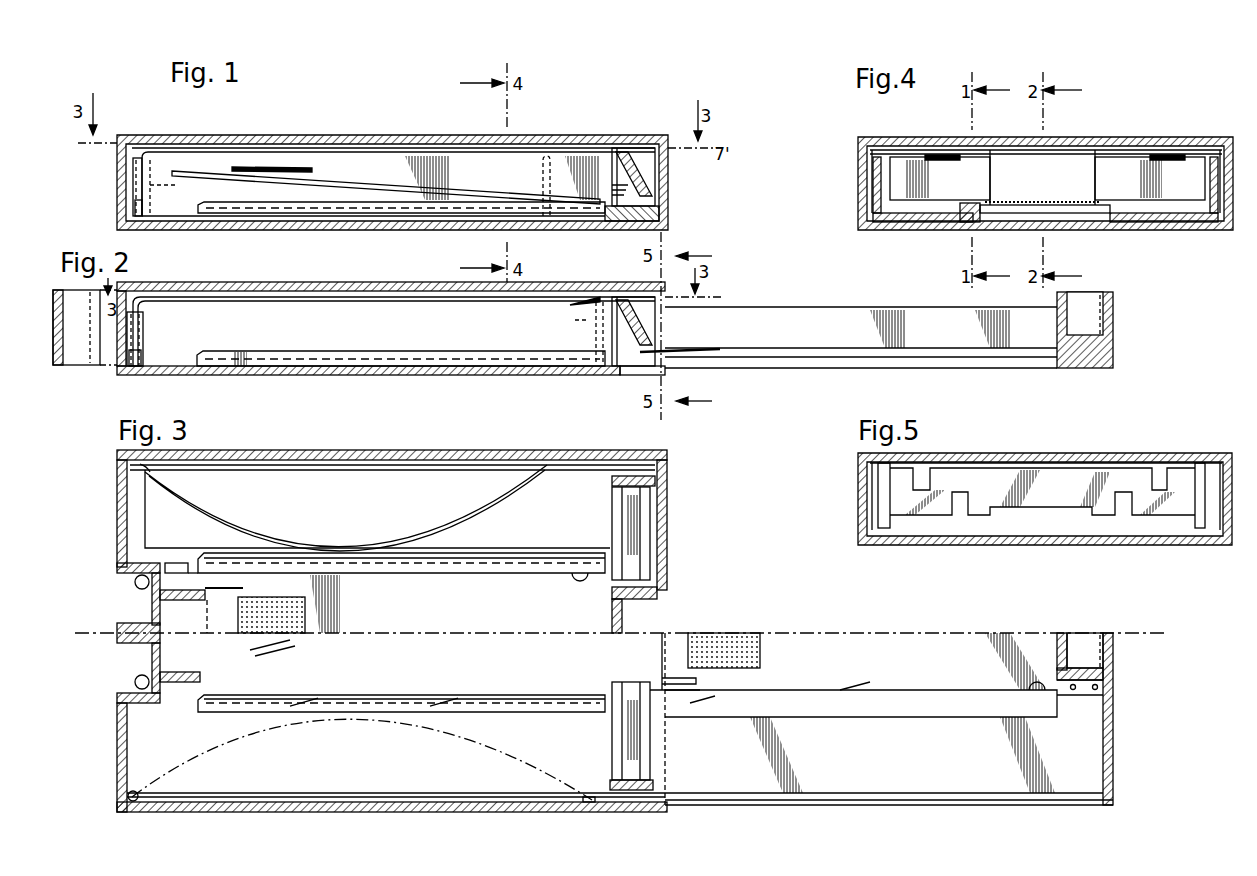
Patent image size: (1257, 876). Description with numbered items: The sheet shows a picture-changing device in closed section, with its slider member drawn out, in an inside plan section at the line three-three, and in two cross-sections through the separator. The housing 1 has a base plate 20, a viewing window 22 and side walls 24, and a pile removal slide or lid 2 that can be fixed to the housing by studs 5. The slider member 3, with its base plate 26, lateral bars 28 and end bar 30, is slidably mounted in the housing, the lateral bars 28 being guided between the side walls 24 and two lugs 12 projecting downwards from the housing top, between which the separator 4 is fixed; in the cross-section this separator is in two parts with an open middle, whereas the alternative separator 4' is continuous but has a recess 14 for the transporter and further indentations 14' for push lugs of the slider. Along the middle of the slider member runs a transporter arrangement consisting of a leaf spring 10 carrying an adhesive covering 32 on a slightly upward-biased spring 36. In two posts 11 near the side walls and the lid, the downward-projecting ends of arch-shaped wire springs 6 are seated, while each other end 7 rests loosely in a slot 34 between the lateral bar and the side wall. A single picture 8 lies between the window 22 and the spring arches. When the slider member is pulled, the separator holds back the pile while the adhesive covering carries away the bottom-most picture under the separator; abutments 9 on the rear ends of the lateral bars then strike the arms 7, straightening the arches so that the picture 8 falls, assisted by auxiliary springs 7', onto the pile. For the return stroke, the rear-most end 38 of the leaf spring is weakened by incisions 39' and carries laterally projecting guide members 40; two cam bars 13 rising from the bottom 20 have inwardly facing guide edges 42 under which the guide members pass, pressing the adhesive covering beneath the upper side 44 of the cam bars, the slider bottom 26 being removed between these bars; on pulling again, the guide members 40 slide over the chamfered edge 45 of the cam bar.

In FIG. 1, the housing 1 is at (124, 137).
In FIG. 2, the housing 1 is at (391, 328).
In FIG. 3, the housing 1 is at (392, 631).
In FIG. 4, the housing 1 is at (866, 137).
In FIG. 1, the pile removal slide 2 is at (122, 148).
In FIG. 2, the pile removal slide 2 is at (74, 370).
In FIG. 3, the pile removal slide 2 is at (117, 742).
In FIG. 1, the slider member 3 is at (684, 189).
In FIG. 2, the slider member 3 is at (757, 307).
In FIG. 3, the slider member 3 is at (1125, 672).
In FIG. 1, the separator 4 is at (632, 149).
In FIG. 2, the separator 4 is at (668, 316).
In FIG. 3, the separator 4 is at (630, 633).
In FIG. 4, the separator 4 is at (1001, 156).
In FIG. 5, the separator 4' is at (1042, 466).
In FIG. 3, the studs 5 is at (135, 583).
In FIG. 1, the wire spring 6 is at (308, 150).
In FIG. 2, the wire spring 6 is at (272, 302).
In FIG. 3, the wire spring 6 is at (490, 507).
In FIG. 4, the wire spring 6 is at (938, 161).
In FIG. 1, the end of wire spring 7 is at (315, 186).
In FIG. 2, the end of wire spring 7 is at (365, 334).
In FIG. 4, the end of wire spring 7 is at (846, 219).
In FIG. 2, the auxiliary springs 7' is at (586, 278).
In FIG. 1, the single picture 8 is at (395, 135).
In FIG. 4, the single picture 8 is at (1021, 148).
In FIG. 1, the abutment 9 is at (169, 185).
In FIG. 2, the abutment 9 is at (586, 327).
In FIG. 3, the abutment 9 is at (152, 470).
In FIG. 1, the leaf spring 10 is at (345, 172).
In FIG. 2, the leaf spring 10 is at (852, 348).
In FIG. 4, the leaf spring 10 is at (1075, 222).
In FIG. 1, the posts 11 is at (134, 205).
In FIG. 2, the posts 11 is at (143, 348).
In FIG. 3, the posts 11 is at (125, 490).
In FIG. 1, the lugs 12 is at (660, 170).
In FIG. 2, the lugs 12 is at (656, 321).
In FIG. 3, the lugs 12 is at (660, 481).
In FIG. 4, the lugs 12 is at (888, 223).
In FIG. 5, the lugs 12 is at (885, 506).
In FIG. 1, the cam bars 13 is at (240, 214).
In FIG. 2, the cam bars 13 is at (415, 354).
In FIG. 3, the cam bars 13 is at (565, 552).
In FIG. 4, the cam bars 13 is at (976, 222).
In FIG. 5, the recess 14 is at (1072, 539).
In FIG. 5, the indentations 14' is at (1041, 496).
In FIG. 1, the base plate 20 is at (396, 226).
In FIG. 2, the base plate 20 is at (384, 374).
In FIG. 3, the base plate 20 is at (125, 540).
In FIG. 4, the base plate 20 is at (1150, 231).
In FIG. 5, the base plate 20 is at (990, 543).
In FIG. 1, the viewing window 22 is at (437, 135).
In FIG. 2, the viewing window 22 is at (345, 291).
In FIG. 4, the viewing window 22 is at (1160, 140).
In FIG. 5, the viewing window 22 is at (1008, 453).
In FIG. 1, the side walls 24 is at (393, 182).
In FIG. 2, the side walls 24 is at (394, 331).
In FIG. 3, the side walls 24 is at (326, 452).
In FIG. 4, the side walls 24 is at (866, 152).
In FIG. 5, the side walls 24 is at (858, 471).
In FIG. 1, the base plate of slider member 26 is at (188, 216).
In FIG. 2, the base plate of slider member 26 is at (780, 367).
In FIG. 3, the base plate of slider member 26 is at (324, 521).
In FIG. 4, the base plate of slider member 26 is at (926, 223).
In FIG. 1, the lateral bars 28 is at (575, 164).
In FIG. 2, the lateral bars 28 is at (818, 322).
In FIG. 3, the lateral bars 28 is at (370, 470).
In FIG. 4, the lateral bars 28 is at (874, 178).
In FIG. 1, the end bar 30 is at (660, 214).
In FIG. 2, the end bar 30 is at (1057, 310).
In FIG. 3, the end bar 30 is at (1113, 736).
In FIG. 1, the adhesive covering 32 is at (254, 166).
In FIG. 2, the adhesive covering 32 is at (702, 348).
In FIG. 3, the adhesive covering 32 is at (268, 635).
In FIG. 3, the slot 34 is at (581, 464).
In FIG. 1, the spring 36 is at (460, 182).
In FIG. 2, the spring 36 is at (912, 350).
In FIG. 3, the spring 36 is at (380, 617).
In FIG. 4, the spring 36 is at (1085, 200).
In FIG. 1, the rear-most end 38 is at (190, 171).
In FIG. 3, the rear-most end 38 is at (205, 606).
In FIG. 3, the incisions 39' is at (796, 631).
In FIG. 3, the guide members 40 is at (178, 562).
In FIG. 1, the guide edges 42 is at (318, 214).
In FIG. 2, the guide edges 42 is at (484, 357).
In FIG. 3, the guide edges 42 is at (454, 574).
In FIG. 4, the guide edges 42 is at (1104, 206).
In FIG. 1, the upper side 44 is at (226, 200).
In FIG. 2, the chamfered edge 45 is at (200, 352).